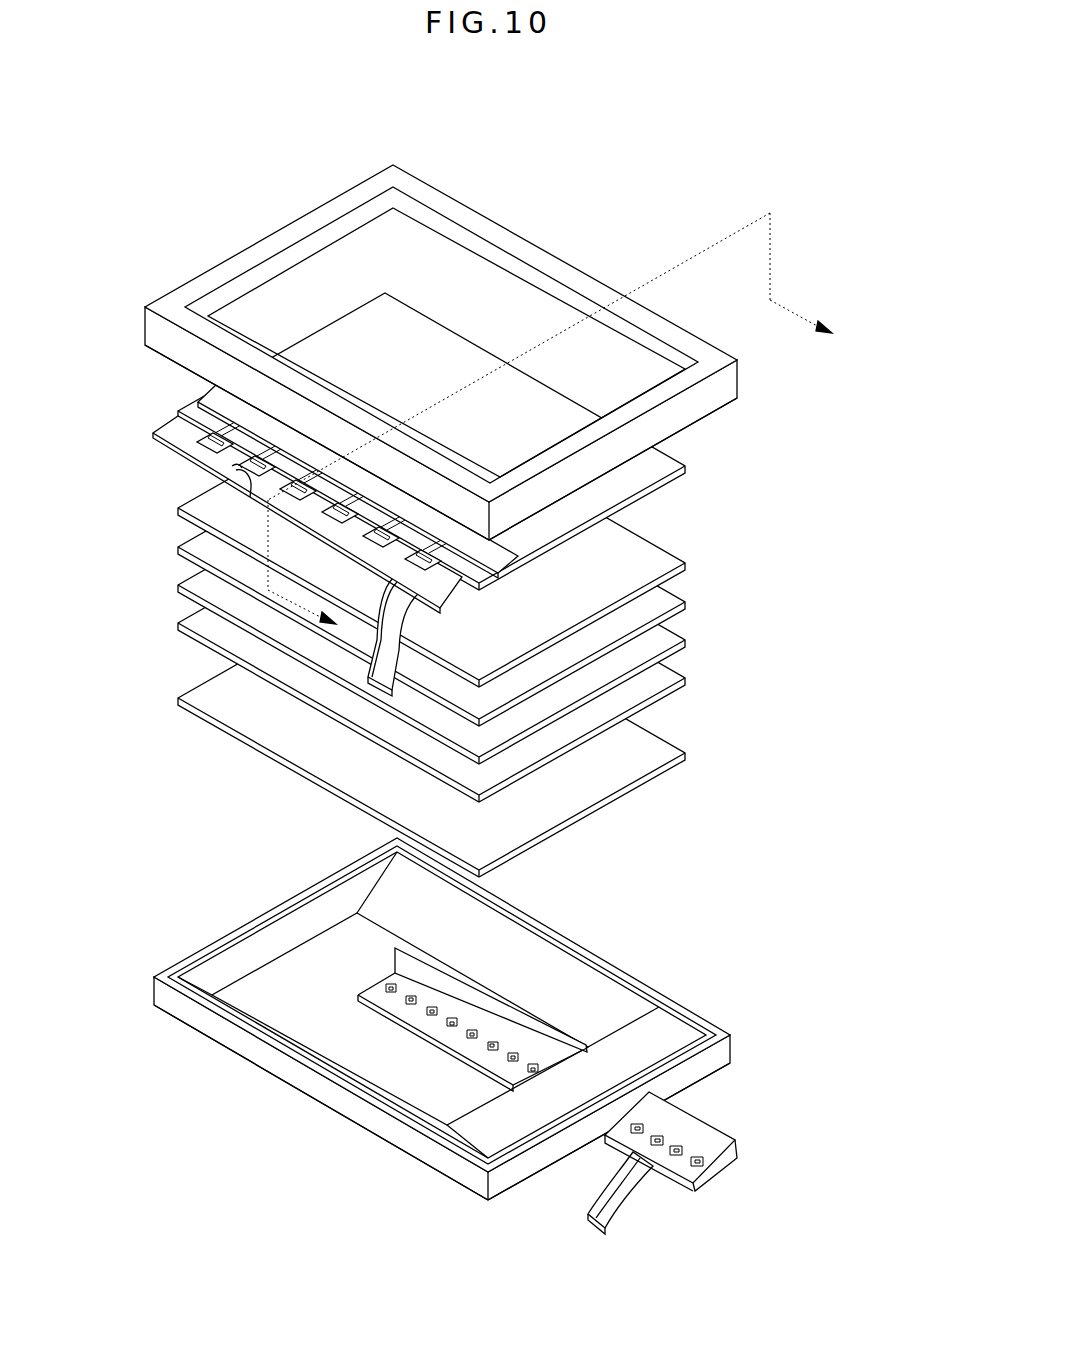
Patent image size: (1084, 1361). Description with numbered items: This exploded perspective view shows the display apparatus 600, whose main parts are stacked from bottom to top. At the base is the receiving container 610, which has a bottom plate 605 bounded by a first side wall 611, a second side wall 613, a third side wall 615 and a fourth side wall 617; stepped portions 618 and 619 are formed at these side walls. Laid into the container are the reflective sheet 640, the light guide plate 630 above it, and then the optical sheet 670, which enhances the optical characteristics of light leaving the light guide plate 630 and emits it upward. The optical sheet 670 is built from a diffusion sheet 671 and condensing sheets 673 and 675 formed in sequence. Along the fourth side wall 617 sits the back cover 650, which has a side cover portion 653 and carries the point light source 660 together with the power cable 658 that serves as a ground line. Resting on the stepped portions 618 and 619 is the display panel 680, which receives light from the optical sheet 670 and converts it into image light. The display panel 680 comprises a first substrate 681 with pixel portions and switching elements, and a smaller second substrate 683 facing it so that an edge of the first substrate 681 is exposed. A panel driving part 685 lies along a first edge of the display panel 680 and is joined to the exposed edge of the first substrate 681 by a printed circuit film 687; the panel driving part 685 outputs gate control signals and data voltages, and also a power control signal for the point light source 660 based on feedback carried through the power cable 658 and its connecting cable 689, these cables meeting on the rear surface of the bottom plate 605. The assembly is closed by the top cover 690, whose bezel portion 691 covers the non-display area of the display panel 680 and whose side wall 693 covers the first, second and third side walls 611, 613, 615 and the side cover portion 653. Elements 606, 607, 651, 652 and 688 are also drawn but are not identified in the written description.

The display apparatus 600 is at (501, 117).
The bottom plate 605 is at (483, 1130).
The frame rim 606 is at (393, 895).
The bottom plate 607 is at (293, 1012).
The receiving container 610 is at (442, 1010).
The first side wall 611 is at (513, 1170).
The second side wall 613 is at (241, 930).
The third side wall 615 is at (337, 1093).
The fourth side wall 617 is at (565, 942).
The stepped portion 618 is at (303, 905).
The stepped portion 619 is at (508, 928).
The light guide plate 630 is at (665, 671).
The reflective sheet 640 is at (665, 745).
The back cover 650 is at (732, 1183).
The light source module 651 is at (719, 1159).
The light sources 652 is at (697, 1164).
The side cover portion 653 is at (713, 1185).
The power cable 658 is at (633, 1208).
The point light source 660 is at (677, 1188).
The optical sheet 670 is at (490, 577).
The diffusion sheet 671 is at (665, 631).
The condensing sheet 673 is at (665, 592).
The condensing sheet 675 is at (756, 645).
The display panel 680 is at (376, 494).
The first substrate 681 is at (196, 433).
The second substrate 683 is at (218, 386).
The panel driving part 685 is at (212, 495).
The printed circuit film 687 is at (242, 478).
The driver ICs 688 is at (215, 452).
The connecting cable 689 is at (372, 670).
The top cover 690 is at (499, 352).
The bezel portion 691 is at (705, 333).
The side wall 693 is at (697, 407).